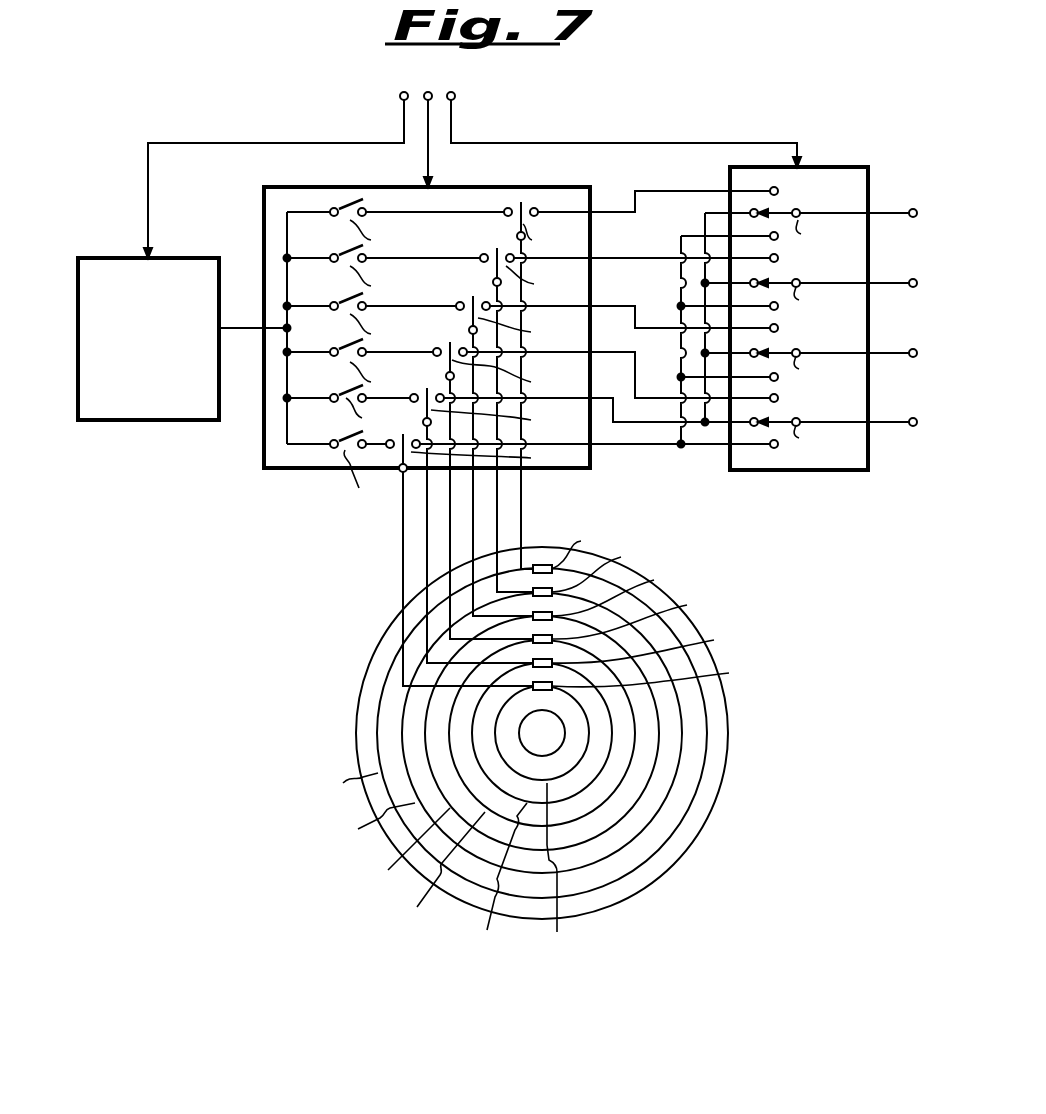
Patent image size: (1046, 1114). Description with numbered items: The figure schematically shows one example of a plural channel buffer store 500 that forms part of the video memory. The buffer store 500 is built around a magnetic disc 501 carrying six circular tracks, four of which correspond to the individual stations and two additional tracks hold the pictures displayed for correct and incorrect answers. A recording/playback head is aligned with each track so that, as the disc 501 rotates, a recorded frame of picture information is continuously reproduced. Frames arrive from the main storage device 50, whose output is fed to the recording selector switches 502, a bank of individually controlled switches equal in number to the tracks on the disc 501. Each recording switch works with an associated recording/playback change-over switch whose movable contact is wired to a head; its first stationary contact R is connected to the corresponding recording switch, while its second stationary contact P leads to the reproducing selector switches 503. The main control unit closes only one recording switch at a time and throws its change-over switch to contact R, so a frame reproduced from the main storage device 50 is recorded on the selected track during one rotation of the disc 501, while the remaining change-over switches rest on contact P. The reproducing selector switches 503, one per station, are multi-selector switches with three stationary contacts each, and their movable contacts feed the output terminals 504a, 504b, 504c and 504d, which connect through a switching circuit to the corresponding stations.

The main storage device 50 is at (150, 420).
The plural channel buffer store 500 is at (544, 745).
The magnetic disc 501 is at (357, 704).
The recording selector switches 502 is at (293, 468).
The reproducing selector switches 503 is at (793, 470).
The output terminal 504a is at (913, 206).
The output terminal 504b is at (913, 279).
The output terminal 504c is at (913, 348).
The output terminal 504d is at (913, 418).